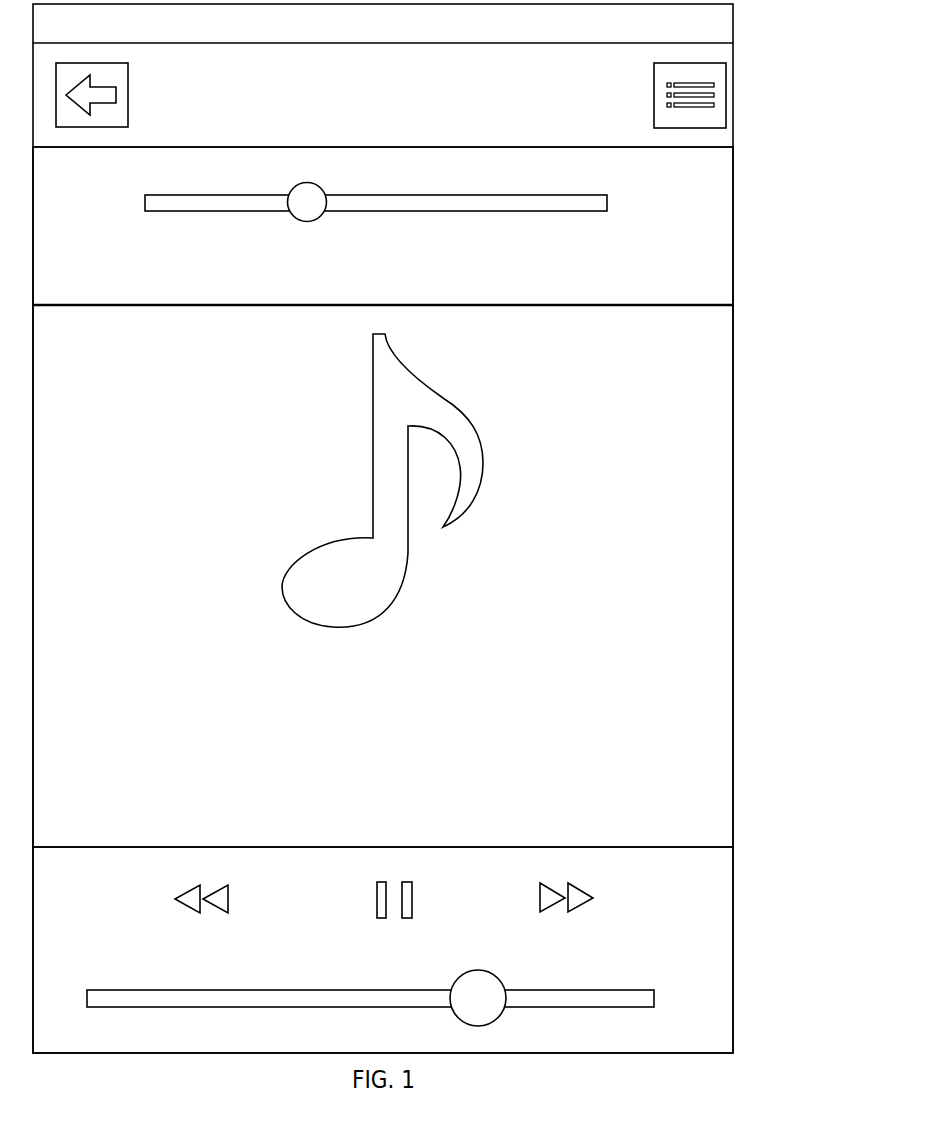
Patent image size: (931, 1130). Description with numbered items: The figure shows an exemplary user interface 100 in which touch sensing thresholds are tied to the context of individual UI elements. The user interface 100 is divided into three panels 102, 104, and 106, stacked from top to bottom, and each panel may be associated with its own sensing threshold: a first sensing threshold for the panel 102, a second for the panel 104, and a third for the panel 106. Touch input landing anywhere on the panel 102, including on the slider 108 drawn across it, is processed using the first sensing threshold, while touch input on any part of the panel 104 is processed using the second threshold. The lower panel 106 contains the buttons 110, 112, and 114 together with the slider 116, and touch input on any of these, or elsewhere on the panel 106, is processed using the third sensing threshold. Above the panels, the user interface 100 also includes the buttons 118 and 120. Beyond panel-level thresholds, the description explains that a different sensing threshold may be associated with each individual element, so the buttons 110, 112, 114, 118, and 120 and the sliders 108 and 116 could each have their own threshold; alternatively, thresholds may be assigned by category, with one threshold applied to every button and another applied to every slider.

The user interface 100 is at (672, 1069).
The panel 102 is at (733, 245).
The panel 104 is at (733, 740).
The panel 106 is at (733, 895).
The slider 108 is at (318, 219).
The button 110 is at (228, 888).
The button 112 is at (412, 893).
The button 114 is at (590, 884).
The slider 116 is at (498, 975).
The button 118 is at (128, 105).
The button 120 is at (654, 100).